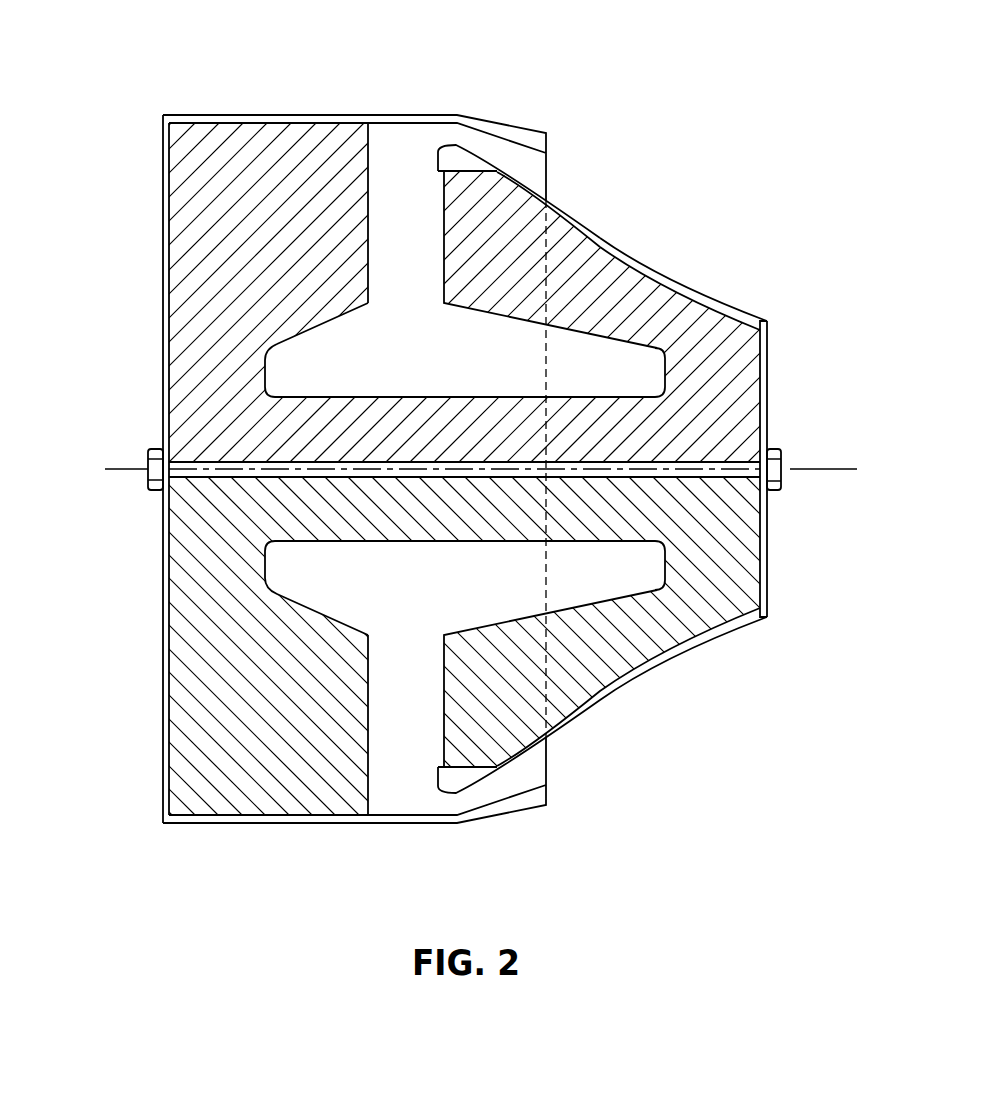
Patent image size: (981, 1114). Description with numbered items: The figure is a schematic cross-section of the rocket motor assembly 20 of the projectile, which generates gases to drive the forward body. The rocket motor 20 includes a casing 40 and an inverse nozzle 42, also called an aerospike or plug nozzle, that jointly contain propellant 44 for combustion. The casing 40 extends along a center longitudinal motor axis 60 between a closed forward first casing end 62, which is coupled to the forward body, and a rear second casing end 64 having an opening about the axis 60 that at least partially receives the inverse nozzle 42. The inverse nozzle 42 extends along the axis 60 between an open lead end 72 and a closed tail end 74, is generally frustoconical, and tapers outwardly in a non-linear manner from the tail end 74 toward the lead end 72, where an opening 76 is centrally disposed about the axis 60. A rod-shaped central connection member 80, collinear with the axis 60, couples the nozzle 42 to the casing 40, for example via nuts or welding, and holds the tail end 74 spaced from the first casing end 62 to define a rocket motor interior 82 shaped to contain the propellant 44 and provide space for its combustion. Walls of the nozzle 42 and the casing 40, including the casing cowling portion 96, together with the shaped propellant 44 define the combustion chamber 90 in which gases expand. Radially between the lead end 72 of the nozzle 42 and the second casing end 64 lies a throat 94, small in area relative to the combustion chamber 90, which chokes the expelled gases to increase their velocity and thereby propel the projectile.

The rocket motor assembly 20 is at (772, 77).
The casing 40 is at (260, 114).
The inverse nozzle 42 is at (767, 339).
The propellant 44 is at (702, 620).
The longitudinal motor axis 60 is at (833, 470).
The first casing end 62 is at (150, 218).
The second casing end 64 is at (510, 112).
The lead end 72 is at (532, 181).
The tail end 74 is at (767, 294).
The opening 76 is at (434, 211).
The connection member 80 is at (726, 468).
The rocket motor interior 82 is at (515, 351).
The combustion chamber 90 is at (415, 594).
The throat 94 is at (520, 772).
The casing cowling portion 96 is at (518, 820).